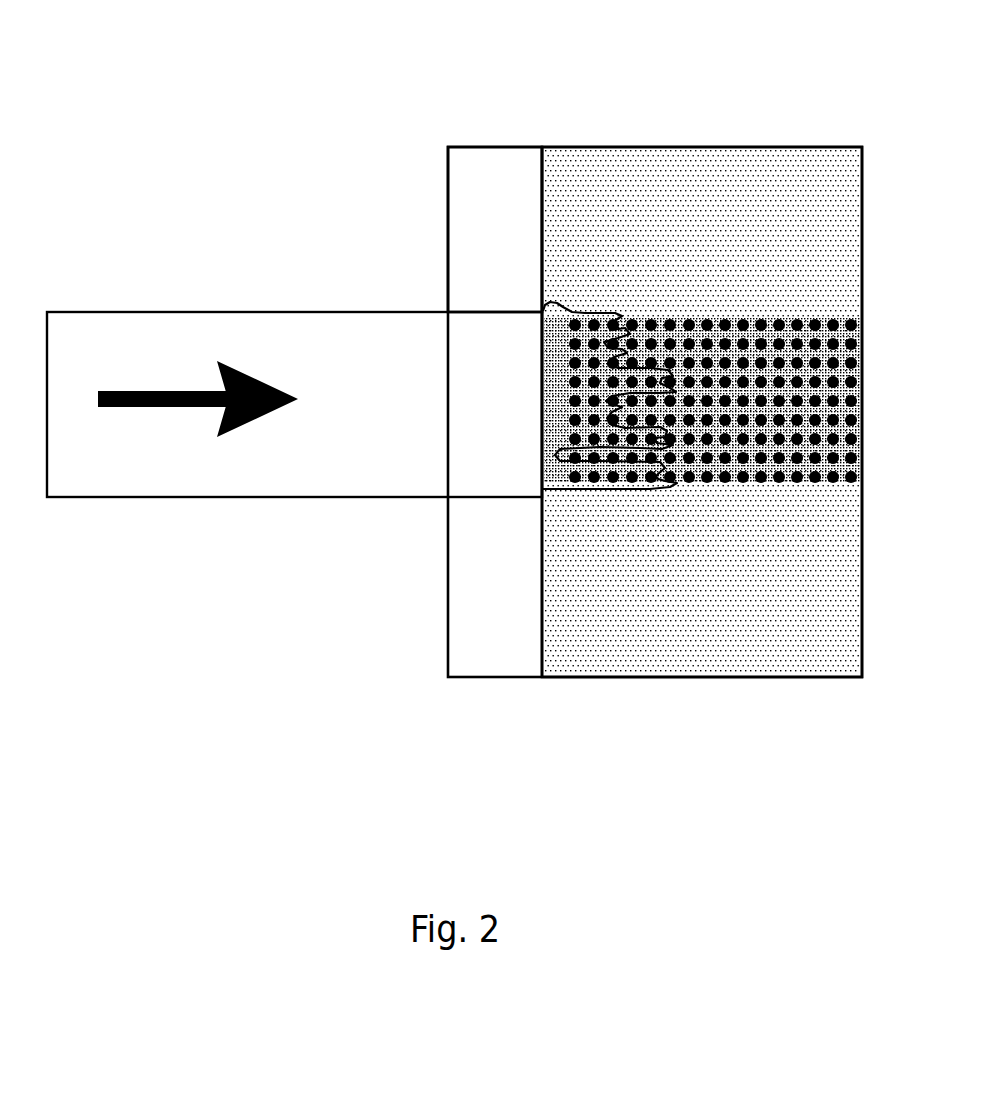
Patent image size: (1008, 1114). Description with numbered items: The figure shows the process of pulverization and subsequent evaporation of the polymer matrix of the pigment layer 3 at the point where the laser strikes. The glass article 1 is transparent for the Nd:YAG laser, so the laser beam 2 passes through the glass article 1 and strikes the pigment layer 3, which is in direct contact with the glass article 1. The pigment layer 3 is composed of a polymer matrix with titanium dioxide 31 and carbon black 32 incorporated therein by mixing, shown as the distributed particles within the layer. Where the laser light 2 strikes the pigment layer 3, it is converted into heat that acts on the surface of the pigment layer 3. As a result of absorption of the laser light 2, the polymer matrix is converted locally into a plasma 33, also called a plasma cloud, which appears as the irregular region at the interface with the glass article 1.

The glass article 1 is at (504, 238).
The laser beam 2 is at (418, 420).
The pigment layer 3 is at (720, 558).
The titanium dioxide 31 is at (662, 327).
The carbon black 32 is at (706, 328).
The plasma 33 is at (588, 415).